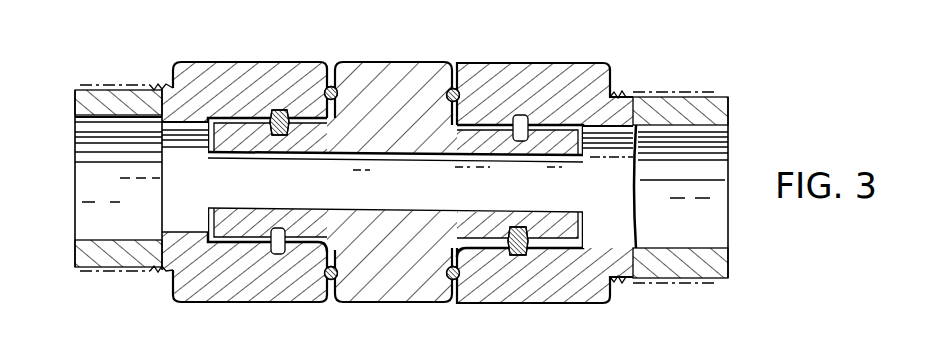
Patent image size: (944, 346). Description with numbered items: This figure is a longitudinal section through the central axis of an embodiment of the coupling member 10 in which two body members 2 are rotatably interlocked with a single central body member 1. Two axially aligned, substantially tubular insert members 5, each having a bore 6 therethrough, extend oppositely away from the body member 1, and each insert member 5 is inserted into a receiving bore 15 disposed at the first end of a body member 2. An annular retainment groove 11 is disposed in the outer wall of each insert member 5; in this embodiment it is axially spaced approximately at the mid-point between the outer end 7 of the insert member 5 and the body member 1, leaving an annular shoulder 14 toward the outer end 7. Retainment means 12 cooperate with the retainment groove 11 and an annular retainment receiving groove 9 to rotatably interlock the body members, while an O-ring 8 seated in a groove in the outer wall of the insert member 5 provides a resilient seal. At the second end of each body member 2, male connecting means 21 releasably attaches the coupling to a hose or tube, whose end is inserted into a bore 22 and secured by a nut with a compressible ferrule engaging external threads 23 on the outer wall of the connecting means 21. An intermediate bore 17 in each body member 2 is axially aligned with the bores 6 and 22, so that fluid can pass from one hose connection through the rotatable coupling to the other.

The body member 1 is at (383, 49).
The body member 2 is at (207, 302).
The insert member 5 is at (300, 143).
The bore 6 is at (566, 201).
The outer end 7 is at (204, 150).
The O-ring 8 is at (467, 62).
The annular retainment receiving groove 9 is at (275, 256).
The coupling member 10 is at (392, 159).
The annular retainment groove 11 is at (283, 150).
The retainment means 12 is at (278, 110).
The annular shoulder 14 is at (238, 117).
The receiving bore 15 is at (305, 244).
The intermediate bore 17 is at (198, 208).
The male connecting means 21 is at (97, 92).
The bore 22 is at (75, 136).
The external threads 23 is at (125, 86).